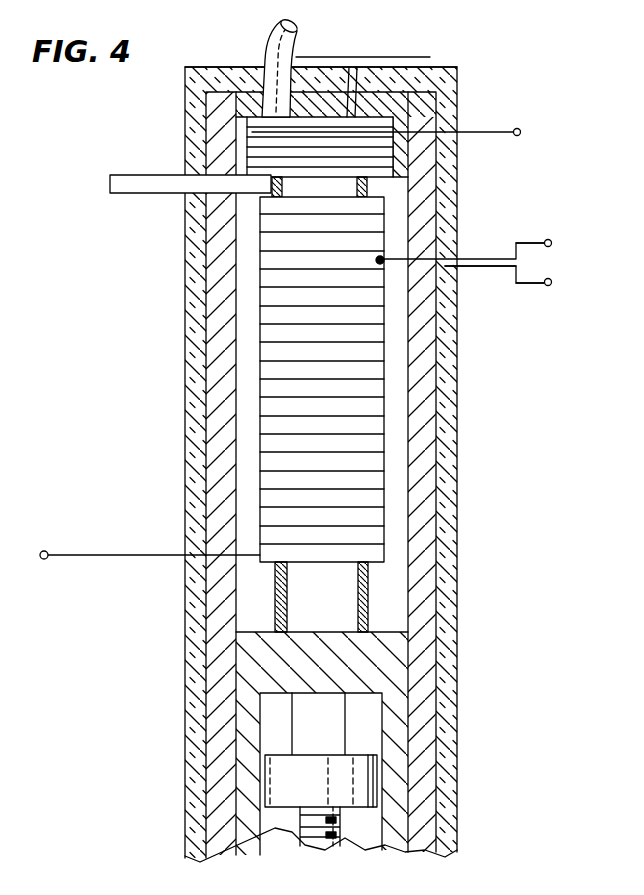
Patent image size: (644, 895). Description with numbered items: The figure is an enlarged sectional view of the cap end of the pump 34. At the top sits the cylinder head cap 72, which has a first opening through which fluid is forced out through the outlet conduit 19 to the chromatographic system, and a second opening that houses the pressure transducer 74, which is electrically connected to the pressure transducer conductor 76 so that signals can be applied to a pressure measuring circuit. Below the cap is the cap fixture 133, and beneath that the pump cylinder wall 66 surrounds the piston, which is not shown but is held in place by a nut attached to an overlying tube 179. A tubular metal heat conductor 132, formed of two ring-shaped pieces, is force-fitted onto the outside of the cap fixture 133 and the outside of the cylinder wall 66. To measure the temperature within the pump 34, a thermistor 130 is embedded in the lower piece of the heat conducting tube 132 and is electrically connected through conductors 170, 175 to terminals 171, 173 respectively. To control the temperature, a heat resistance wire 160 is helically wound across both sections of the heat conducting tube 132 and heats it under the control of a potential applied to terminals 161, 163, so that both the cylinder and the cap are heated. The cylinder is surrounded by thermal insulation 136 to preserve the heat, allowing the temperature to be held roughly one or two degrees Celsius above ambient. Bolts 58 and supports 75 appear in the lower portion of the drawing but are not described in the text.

The outlet conduit 19 is at (262, 43).
The pump 34 is at (579, 158).
The bolts 58 is at (333, 830).
The pump cylinder wall 66 is at (370, 609).
The cylinder head cap 72 is at (320, 56).
The transducer 74 is at (357, 67).
The support posts 75 is at (335, 600).
The pressure transducer conductor 76 is at (430, 57).
The thermistor 130 is at (387, 256).
The tubular metal heat conductor 132 is at (265, 172).
The cap fixture 133 is at (410, 117).
The thermal insulation 136 is at (447, 664).
The heat resistance wire 160 is at (377, 367).
The terminal 161 is at (44, 559).
The terminal 163 is at (517, 128).
The conductor 170 is at (548, 240).
The terminal 171 is at (551, 245).
The terminal 173 is at (551, 281).
The conductor 175 is at (548, 286).
The tube 179 is at (327, 762).